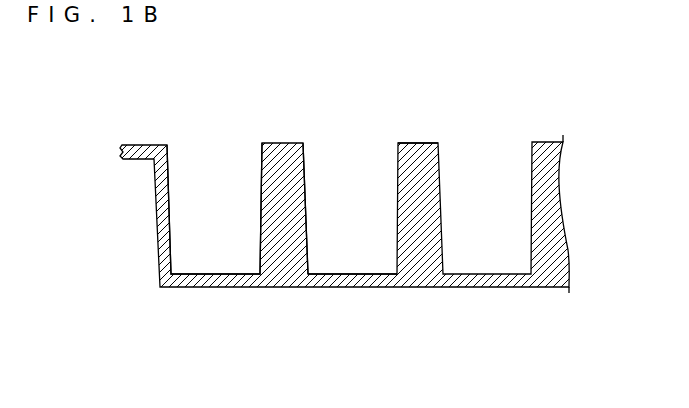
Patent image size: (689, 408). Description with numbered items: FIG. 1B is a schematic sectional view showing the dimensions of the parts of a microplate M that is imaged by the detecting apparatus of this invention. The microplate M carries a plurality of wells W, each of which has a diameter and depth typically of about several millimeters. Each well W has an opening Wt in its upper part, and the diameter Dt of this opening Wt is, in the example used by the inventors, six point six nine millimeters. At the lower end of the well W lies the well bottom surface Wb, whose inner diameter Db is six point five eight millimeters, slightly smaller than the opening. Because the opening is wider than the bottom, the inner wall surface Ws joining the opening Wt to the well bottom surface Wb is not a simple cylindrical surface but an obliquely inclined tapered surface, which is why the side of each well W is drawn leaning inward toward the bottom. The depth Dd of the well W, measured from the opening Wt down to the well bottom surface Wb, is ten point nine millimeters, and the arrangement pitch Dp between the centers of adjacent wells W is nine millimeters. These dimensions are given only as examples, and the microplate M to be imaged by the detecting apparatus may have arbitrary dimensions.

The microplate M is at (160, 143).
The well W is at (200, 173).
The inner wall surface Ws is at (303, 185).
The well bottom surface Wb is at (327, 274).
The opening Wt is at (375, 145).
The diameter of the opening Dt is at (397, 355).
The depth of the well Dd is at (442, 142).
The arrangement pitch Dp is at (216, 233).
The inner diameter of the well bottom surface Db is at (397, 338).